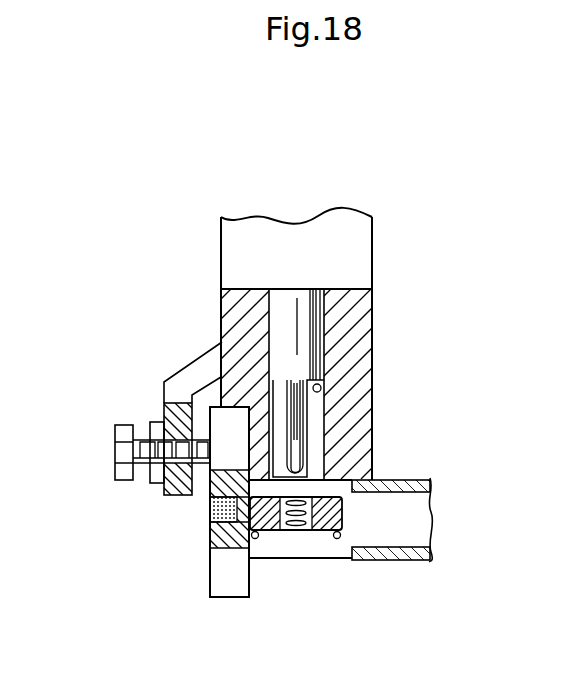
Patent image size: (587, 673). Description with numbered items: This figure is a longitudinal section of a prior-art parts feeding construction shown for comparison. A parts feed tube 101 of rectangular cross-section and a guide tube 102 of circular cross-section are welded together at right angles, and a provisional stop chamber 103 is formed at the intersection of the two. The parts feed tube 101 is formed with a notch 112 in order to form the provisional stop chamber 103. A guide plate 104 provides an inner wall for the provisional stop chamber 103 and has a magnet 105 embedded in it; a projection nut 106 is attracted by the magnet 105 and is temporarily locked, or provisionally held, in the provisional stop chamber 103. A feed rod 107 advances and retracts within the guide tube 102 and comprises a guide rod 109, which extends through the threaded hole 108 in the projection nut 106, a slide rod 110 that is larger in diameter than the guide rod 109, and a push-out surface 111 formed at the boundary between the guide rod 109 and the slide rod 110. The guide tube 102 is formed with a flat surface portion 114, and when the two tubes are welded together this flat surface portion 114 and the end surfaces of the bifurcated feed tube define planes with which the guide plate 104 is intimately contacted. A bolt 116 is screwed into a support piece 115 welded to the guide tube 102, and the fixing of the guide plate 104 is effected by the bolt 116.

The parts feed tube 101 is at (413, 472).
The guide tube 102 is at (373, 296).
The provisional stop chamber 103 is at (282, 548).
The guide plate 104 is at (210, 578).
The magnet 105 is at (210, 513).
The projection nut 106 is at (345, 520).
The feed rod 107 is at (253, 313).
The threaded hole 108 is at (300, 529).
The guide rod 109 is at (305, 421).
The slide rod 110 is at (313, 338).
The push-out surface 111 is at (318, 389).
The notch 112 is at (340, 560).
The flat surface portion 114 is at (249, 433).
The support piece 115 is at (178, 371).
The bolt 116 is at (127, 483).